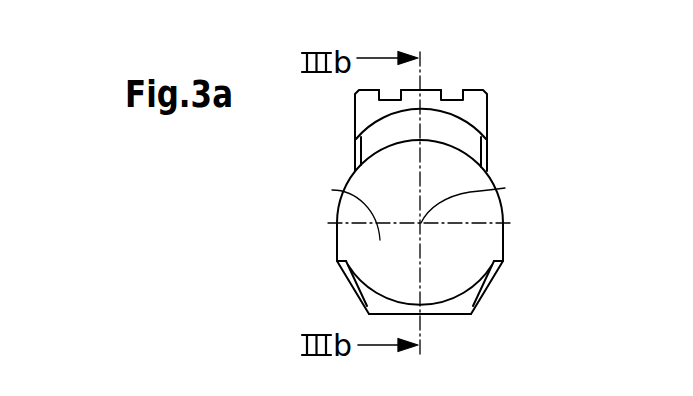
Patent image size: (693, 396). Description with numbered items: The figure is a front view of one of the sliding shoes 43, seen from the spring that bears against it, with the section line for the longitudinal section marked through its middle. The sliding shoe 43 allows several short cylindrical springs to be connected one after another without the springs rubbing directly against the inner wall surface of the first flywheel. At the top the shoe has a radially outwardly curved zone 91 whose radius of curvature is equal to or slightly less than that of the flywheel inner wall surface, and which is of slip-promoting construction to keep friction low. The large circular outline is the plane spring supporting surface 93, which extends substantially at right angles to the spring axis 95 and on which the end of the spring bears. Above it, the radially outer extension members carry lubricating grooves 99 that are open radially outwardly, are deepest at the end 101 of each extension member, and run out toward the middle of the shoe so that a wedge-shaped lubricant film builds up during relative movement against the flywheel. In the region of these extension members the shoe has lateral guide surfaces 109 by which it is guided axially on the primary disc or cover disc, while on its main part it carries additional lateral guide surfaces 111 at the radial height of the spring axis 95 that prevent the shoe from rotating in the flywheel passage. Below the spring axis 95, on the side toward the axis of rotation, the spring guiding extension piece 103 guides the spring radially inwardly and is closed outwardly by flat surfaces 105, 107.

The sliding shoe 43 is at (548, 200).
The radially outwardly curved zone 91 is at (432, 86).
The spring supporting surface 93 is at (332, 190).
The spring axis 95 is at (505, 188).
The lubricating groove 99 is at (391, 92).
The end of the extension member 101 is at (476, 106).
The spring guiding extension piece 103 is at (372, 300).
The flat surface 105 is at (348, 281).
The flat surface 107 is at (456, 321).
The lateral guide surface 109 is at (352, 122).
The additional lateral guide surface 111 is at (332, 237).